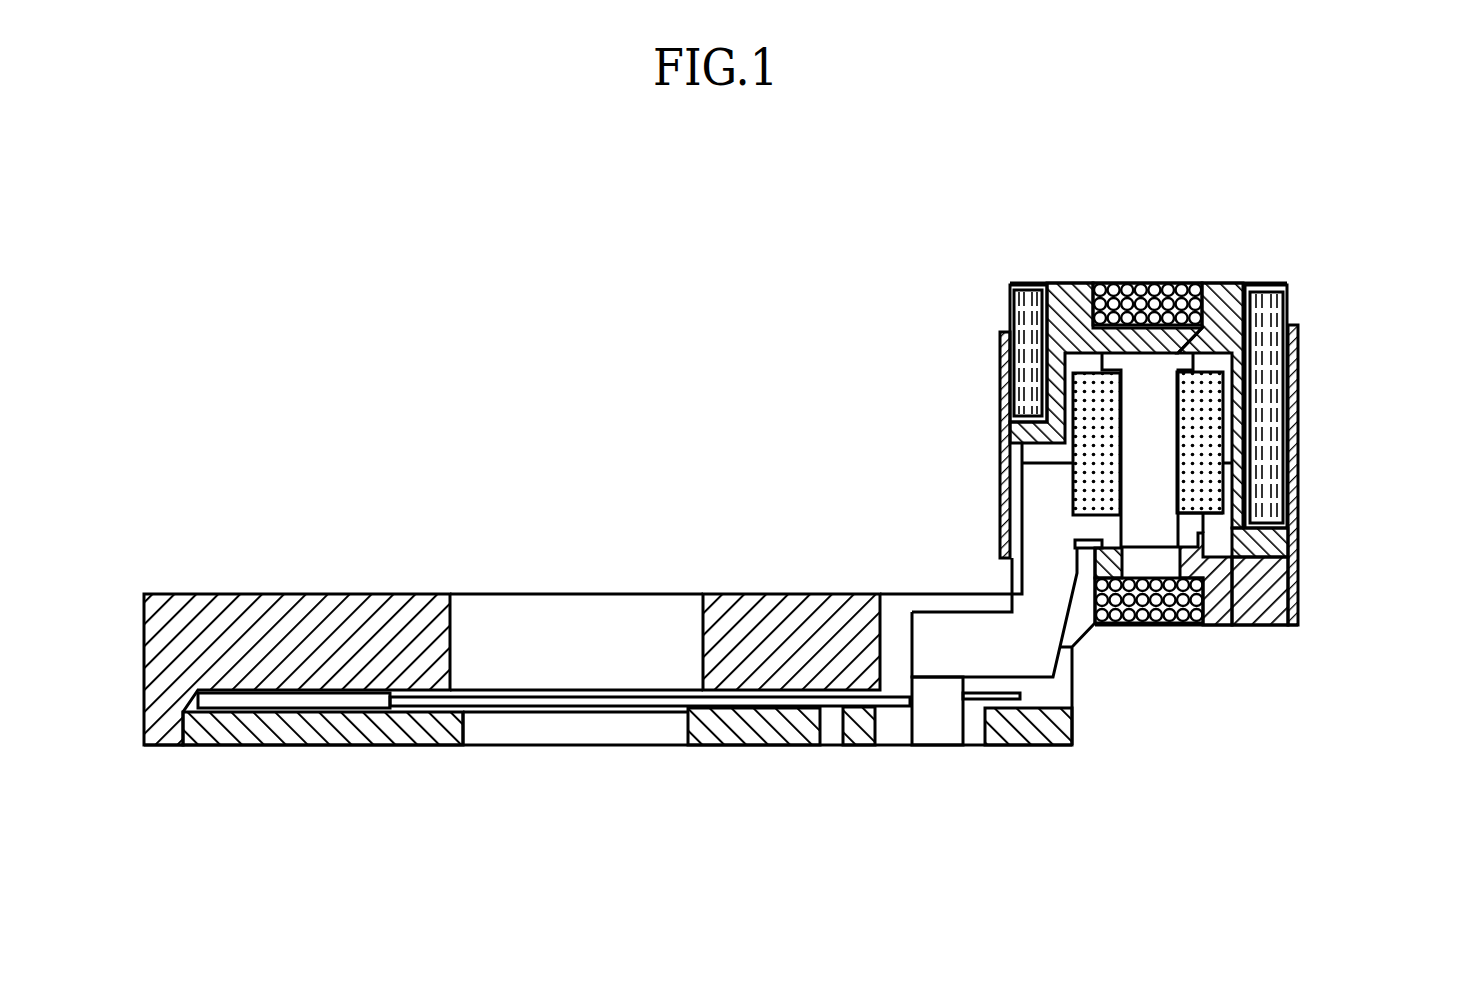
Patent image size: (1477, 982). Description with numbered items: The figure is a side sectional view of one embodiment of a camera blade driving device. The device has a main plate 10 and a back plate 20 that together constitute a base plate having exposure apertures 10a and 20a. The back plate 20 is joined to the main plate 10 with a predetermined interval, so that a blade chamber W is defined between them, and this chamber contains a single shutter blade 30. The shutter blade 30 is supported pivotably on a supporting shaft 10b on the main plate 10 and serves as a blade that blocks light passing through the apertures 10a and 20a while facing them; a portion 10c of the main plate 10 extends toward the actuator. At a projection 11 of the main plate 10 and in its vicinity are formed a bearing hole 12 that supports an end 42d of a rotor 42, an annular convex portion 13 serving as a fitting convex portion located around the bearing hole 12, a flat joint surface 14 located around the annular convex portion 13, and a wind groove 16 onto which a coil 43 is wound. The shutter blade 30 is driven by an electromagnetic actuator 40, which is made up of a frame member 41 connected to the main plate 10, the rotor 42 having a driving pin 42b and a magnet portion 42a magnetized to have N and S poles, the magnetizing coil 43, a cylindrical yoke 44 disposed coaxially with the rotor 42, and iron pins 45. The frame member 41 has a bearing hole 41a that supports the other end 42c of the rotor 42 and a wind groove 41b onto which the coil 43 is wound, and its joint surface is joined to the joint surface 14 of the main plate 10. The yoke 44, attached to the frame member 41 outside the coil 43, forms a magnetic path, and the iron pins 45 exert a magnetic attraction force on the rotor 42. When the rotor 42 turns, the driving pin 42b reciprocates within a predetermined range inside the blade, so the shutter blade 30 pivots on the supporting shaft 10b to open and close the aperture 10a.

The blade chamber W is at (301, 697).
The main plate 10 is at (752, 595).
The exposure aperture 10a is at (472, 595).
The supporting shaft 10b is at (836, 745).
The base arm 10c is at (887, 603).
The projection 11 is at (1298, 592).
The bearing hole 12 is at (1115, 578).
The annular convex portion 13 is at (1222, 513).
The joint surface 14 is at (1298, 567).
The wind groove 16 is at (1198, 625).
The back plate 20 is at (735, 745).
The exposure aperture 20a is at (458, 745).
The shutter blade 30 is at (612, 707).
The electromagnetic actuator 40 is at (1238, 274).
The frame member 41 is at (1298, 543).
The bearing hole 41a is at (1098, 283).
The wind groove 41b is at (1195, 283).
The rotor 42 is at (1230, 413).
The magnet portion 42a is at (1210, 450).
The driving pin 42b is at (938, 718).
The end of the rotor 42c is at (1147, 352).
The end of the rotor 42d is at (1143, 548).
The coil 43 is at (1160, 283).
The yoke 44 is at (1298, 325).
The iron pins 45 is at (1030, 287).